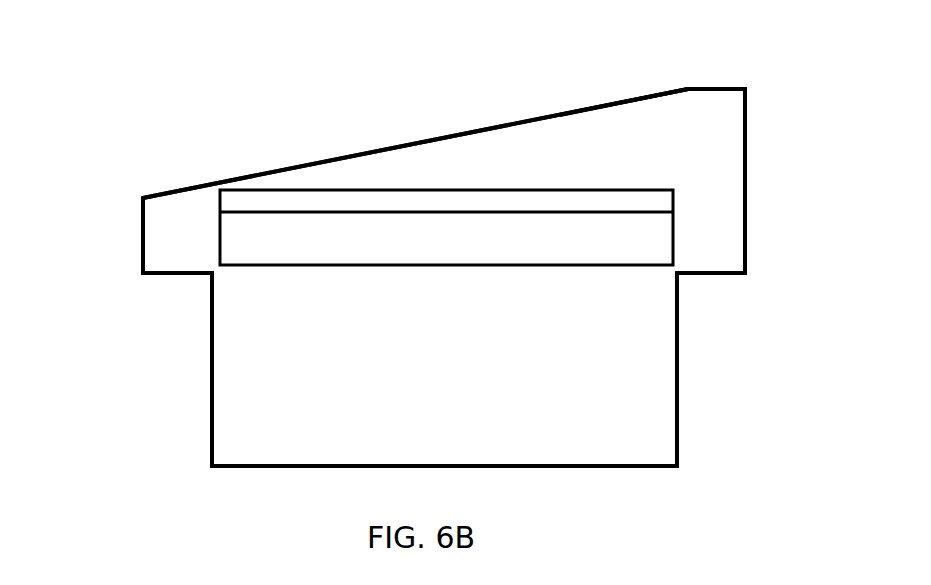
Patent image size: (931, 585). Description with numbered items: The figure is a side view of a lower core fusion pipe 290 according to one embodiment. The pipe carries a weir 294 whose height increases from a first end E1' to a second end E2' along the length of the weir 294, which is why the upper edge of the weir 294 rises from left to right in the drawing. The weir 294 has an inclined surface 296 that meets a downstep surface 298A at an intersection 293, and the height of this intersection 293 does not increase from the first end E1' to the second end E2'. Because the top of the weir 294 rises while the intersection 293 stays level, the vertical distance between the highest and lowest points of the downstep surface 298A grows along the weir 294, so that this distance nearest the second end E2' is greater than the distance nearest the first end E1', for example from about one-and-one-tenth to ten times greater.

The fiber optic ferrule body 290 is at (545, 383).
The intersection 293 is at (497, 187).
The weir 294 is at (432, 137).
The inclined surface 296 is at (327, 203).
The downstep surface 298A is at (603, 143).
The first end E1' is at (100, 202).
The second end E2' is at (788, 150).